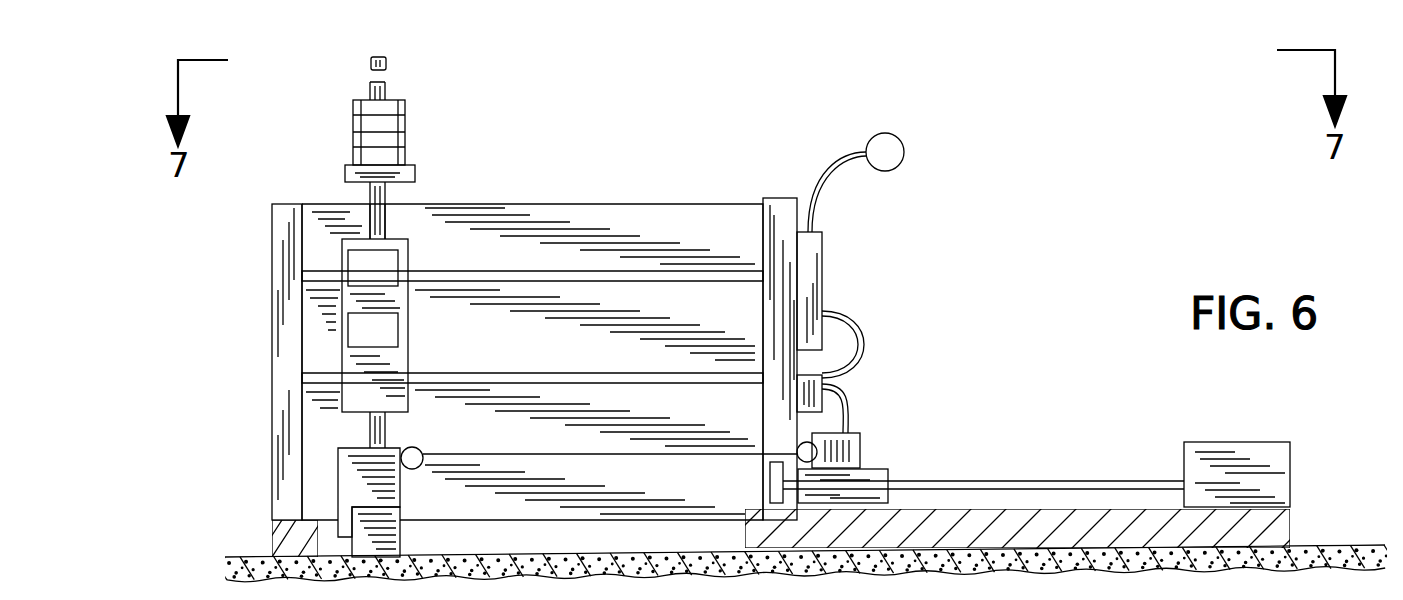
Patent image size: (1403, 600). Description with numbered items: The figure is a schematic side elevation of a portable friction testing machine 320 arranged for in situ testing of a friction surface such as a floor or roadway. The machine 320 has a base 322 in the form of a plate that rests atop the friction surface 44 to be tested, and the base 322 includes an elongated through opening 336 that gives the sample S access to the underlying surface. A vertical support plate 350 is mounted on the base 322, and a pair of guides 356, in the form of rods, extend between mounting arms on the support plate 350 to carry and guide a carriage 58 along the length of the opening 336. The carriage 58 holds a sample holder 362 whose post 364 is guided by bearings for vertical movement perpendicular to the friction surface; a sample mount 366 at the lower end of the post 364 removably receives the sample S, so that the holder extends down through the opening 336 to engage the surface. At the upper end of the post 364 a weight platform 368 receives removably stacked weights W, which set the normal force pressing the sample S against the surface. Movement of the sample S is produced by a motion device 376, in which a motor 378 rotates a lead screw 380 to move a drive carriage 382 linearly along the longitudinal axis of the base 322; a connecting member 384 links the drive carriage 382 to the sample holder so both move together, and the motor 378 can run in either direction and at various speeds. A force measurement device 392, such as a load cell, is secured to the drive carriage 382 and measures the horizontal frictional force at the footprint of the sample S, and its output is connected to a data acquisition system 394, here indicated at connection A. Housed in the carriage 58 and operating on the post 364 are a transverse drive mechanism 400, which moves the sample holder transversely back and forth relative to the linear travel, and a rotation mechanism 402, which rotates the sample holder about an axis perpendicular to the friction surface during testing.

The ground/floor 44 is at (262, 550).
The support post 58 is at (340, 340).
The machine 320 is at (534, 312).
The base 322 is at (1284, 525).
The elongated through opening 336 is at (1012, 514).
The vertical support plate 350 is at (552, 203).
The guides 356 is at (598, 271).
The sample holder 362 is at (392, 220).
The post 364 is at (368, 222).
The sample mount 366 is at (398, 448).
The weight platform 368 is at (415, 165).
The motion device 376 is at (1128, 440).
The motor 378 is at (1232, 442).
The lead screw 380 is at (1067, 480).
The drive carriage 382 is at (890, 474).
The connecting member 384 is at (600, 452).
The force measurement device 392 is at (862, 448).
The data acquisition system 394 is at (852, 256).
The transverse drive mechanism 400 is at (398, 260).
The rotation mechanism 402 is at (398, 333).
The weights W is at (350, 123).
The sample S is at (400, 522).
The air supply connection A is at (856, 182).